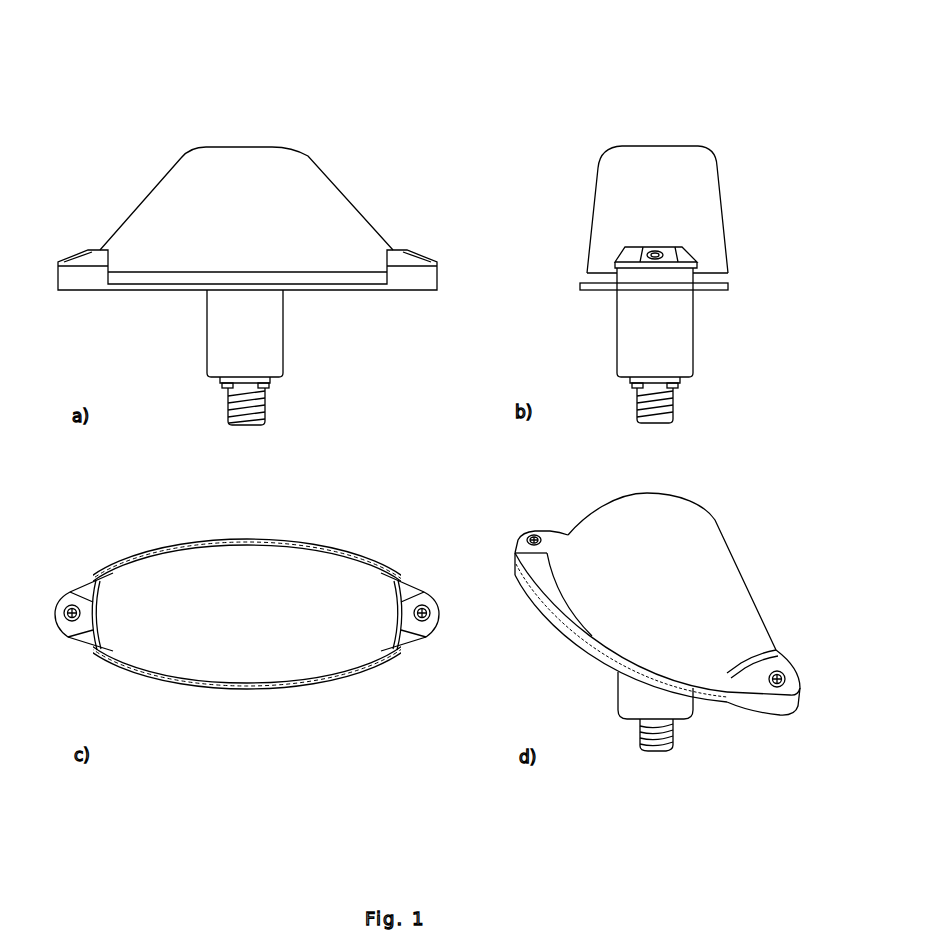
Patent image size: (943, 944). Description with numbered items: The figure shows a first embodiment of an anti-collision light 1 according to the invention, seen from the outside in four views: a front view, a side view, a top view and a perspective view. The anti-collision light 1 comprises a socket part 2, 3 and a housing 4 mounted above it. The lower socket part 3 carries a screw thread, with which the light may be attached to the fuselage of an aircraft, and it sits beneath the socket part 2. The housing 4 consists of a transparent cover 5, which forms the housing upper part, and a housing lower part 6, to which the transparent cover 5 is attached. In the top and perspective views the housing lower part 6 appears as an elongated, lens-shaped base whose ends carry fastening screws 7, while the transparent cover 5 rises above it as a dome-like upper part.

The anti-collision light 1 is at (112, 86).
The socket part 2 is at (237, 342).
The lower socket part 3 is at (266, 406).
The housing 4 is at (560, 237).
The transparent cover 5 is at (242, 227).
The housing lower part 6 is at (84, 289).
The fastening screw 7 is at (423, 606).